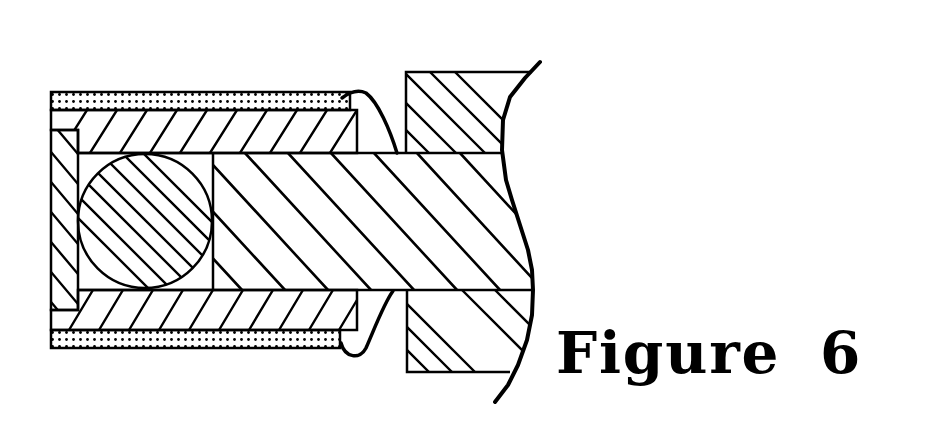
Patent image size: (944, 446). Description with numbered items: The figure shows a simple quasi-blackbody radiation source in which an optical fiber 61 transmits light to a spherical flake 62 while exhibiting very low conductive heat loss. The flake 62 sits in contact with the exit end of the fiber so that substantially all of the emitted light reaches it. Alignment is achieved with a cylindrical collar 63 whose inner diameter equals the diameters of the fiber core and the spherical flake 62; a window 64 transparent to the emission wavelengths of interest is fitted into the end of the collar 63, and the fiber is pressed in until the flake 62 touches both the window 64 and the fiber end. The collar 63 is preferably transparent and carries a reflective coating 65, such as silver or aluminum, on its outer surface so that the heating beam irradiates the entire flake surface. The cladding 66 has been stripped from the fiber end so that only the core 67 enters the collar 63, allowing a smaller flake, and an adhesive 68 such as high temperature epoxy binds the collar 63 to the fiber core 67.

The optical fiber 61 is at (545, 151).
The flake 62 is at (165, 262).
The cylindrical collar 63 is at (298, 312).
The window 64 is at (60, 280).
The reflective coating 65 is at (168, 92).
The cladding 66 is at (487, 90).
The core 67 is at (497, 253).
The adhesive 68 is at (363, 103).